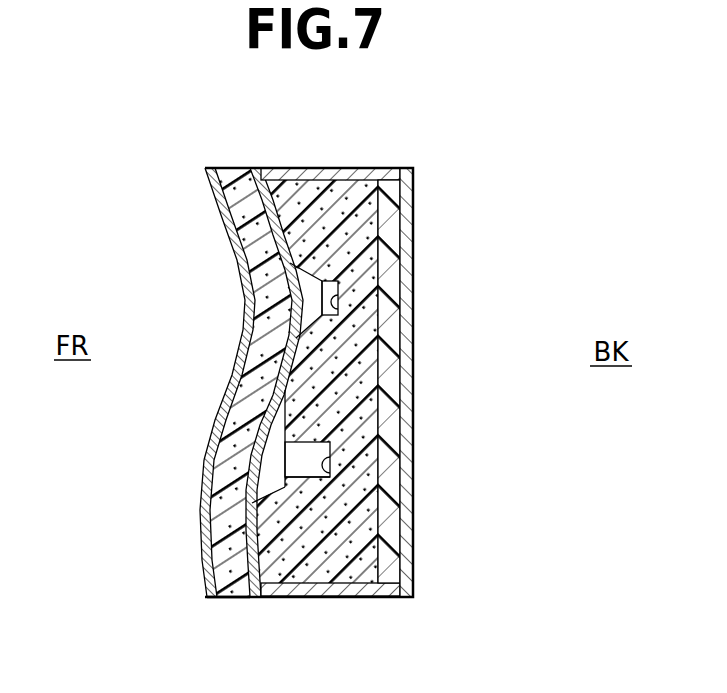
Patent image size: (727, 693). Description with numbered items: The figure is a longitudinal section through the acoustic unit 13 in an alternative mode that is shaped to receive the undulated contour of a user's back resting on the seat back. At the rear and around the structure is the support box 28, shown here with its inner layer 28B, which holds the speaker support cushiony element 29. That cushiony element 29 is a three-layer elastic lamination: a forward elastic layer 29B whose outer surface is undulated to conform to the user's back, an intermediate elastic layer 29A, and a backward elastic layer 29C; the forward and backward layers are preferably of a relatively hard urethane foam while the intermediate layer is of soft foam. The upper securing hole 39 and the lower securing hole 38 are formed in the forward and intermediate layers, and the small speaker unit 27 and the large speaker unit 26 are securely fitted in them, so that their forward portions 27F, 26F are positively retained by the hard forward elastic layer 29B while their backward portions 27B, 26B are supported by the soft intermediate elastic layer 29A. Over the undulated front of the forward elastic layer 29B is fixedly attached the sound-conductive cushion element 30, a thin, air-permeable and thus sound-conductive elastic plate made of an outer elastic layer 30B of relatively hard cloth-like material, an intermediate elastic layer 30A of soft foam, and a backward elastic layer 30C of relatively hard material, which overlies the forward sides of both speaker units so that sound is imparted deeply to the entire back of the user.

The acoustic unit 13 is at (505, 190).
The large speaker unit 26 is at (331, 441).
The backward portion of large speaker unit 26B is at (318, 452).
The forward portion of large speaker unit 26F is at (267, 473).
The small speaker unit 27 is at (334, 278).
The backward portion of small speaker unit 27B is at (336, 287).
The forward portion of small speaker unit 27F is at (302, 286).
The support box 28 is at (413, 168).
The inner layer of back board 28B is at (398, 370).
The speaker support cushiony element 29 is at (318, 180).
The intermediate elastic layer 29A is at (356, 178).
The forward elastic layer 29B is at (262, 178).
The backward elastic layer 29C is at (399, 562).
The sound-conductive cushion element 30 is at (229, 169).
The intermediate elastic layer of thin plate element 30A is at (234, 598).
The outer elastic layer of thin plate element 30B is at (200, 523).
The backward elastic layer of thin plate element 30C is at (263, 435).
The lower securing hole 38 is at (330, 478).
The upper securing hole 39 is at (336, 312).